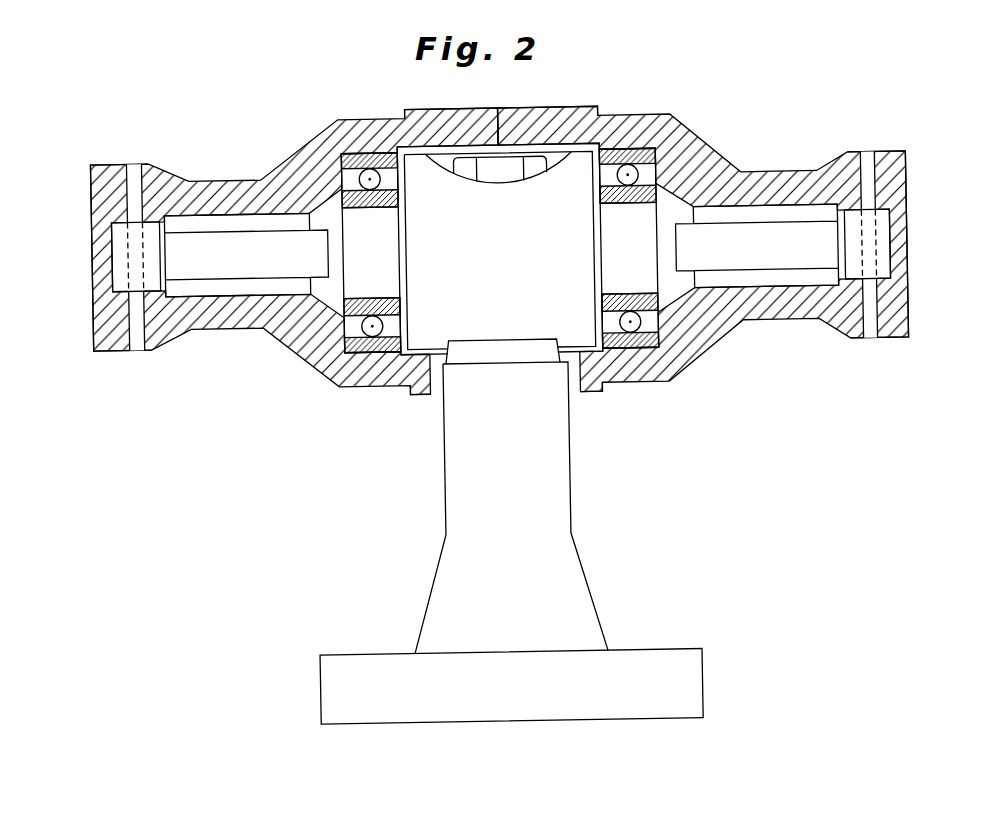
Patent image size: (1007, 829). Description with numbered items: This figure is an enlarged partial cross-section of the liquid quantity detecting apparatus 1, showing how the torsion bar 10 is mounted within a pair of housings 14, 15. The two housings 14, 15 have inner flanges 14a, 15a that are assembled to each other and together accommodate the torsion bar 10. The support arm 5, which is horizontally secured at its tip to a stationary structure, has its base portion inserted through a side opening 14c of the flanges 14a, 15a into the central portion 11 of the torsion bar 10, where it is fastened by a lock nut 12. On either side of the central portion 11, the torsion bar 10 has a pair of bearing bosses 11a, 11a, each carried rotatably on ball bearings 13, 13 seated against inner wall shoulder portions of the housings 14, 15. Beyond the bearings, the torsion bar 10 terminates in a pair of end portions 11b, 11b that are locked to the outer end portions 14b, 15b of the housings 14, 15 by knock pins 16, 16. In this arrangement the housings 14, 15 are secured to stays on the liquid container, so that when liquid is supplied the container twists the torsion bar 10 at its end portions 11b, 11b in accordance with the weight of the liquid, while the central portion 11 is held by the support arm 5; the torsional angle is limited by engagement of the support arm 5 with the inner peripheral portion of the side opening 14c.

The liquid quantity detecting apparatus 1 is at (824, 93).
The support arm 5 is at (547, 579).
The torsion bar 10 is at (250, 259).
The central portion 11 is at (424, 326).
The bearing boss 11a is at (386, 273).
The end portion 11b is at (130, 267).
The lock nut 12 is at (505, 168).
The ball bearing 13 is at (364, 150).
The housing 14 is at (298, 168).
The inner flange 14a is at (442, 129).
The outer end portion 14b is at (110, 170).
The side opening 14c is at (578, 385).
The housing 15 is at (697, 153).
The inner flange 15a is at (550, 128).
The outer end portion 15b is at (895, 164).
The knock pin 16 is at (136, 339).